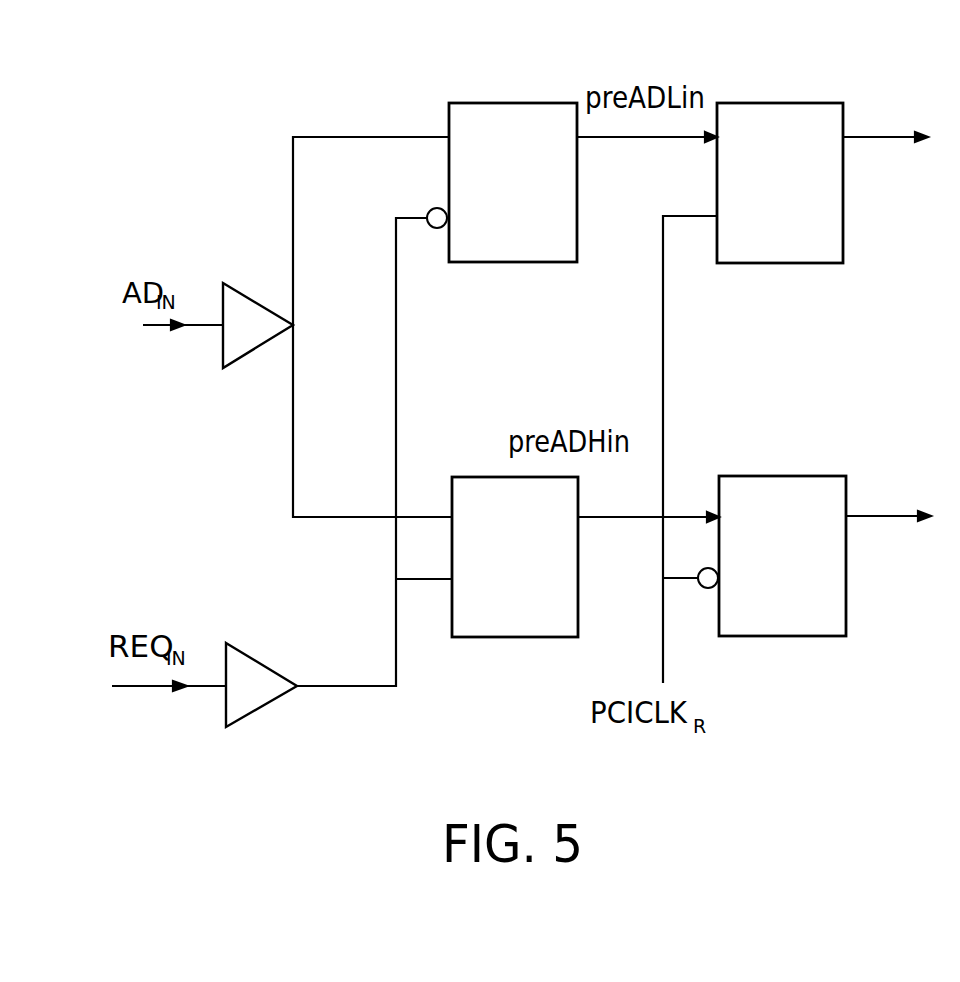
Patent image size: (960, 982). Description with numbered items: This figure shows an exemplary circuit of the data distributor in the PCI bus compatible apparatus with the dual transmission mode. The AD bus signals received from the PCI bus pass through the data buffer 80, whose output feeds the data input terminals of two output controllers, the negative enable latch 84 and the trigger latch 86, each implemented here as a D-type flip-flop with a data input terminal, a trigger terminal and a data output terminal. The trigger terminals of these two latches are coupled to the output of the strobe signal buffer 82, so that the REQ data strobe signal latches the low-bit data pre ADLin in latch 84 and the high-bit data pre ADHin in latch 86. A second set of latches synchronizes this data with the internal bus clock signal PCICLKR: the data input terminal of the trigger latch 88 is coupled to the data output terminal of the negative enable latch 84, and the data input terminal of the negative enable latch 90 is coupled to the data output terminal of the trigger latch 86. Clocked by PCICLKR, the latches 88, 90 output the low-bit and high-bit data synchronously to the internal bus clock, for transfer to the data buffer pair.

The data buffer 80 is at (218, 302).
The strobe signal buffer 82 is at (245, 715).
The negative enable latch 84 is at (498, 103).
The trigger latch 86 is at (483, 477).
The trigger latch 88 is at (843, 200).
The negative enable latch 90 is at (745, 476).